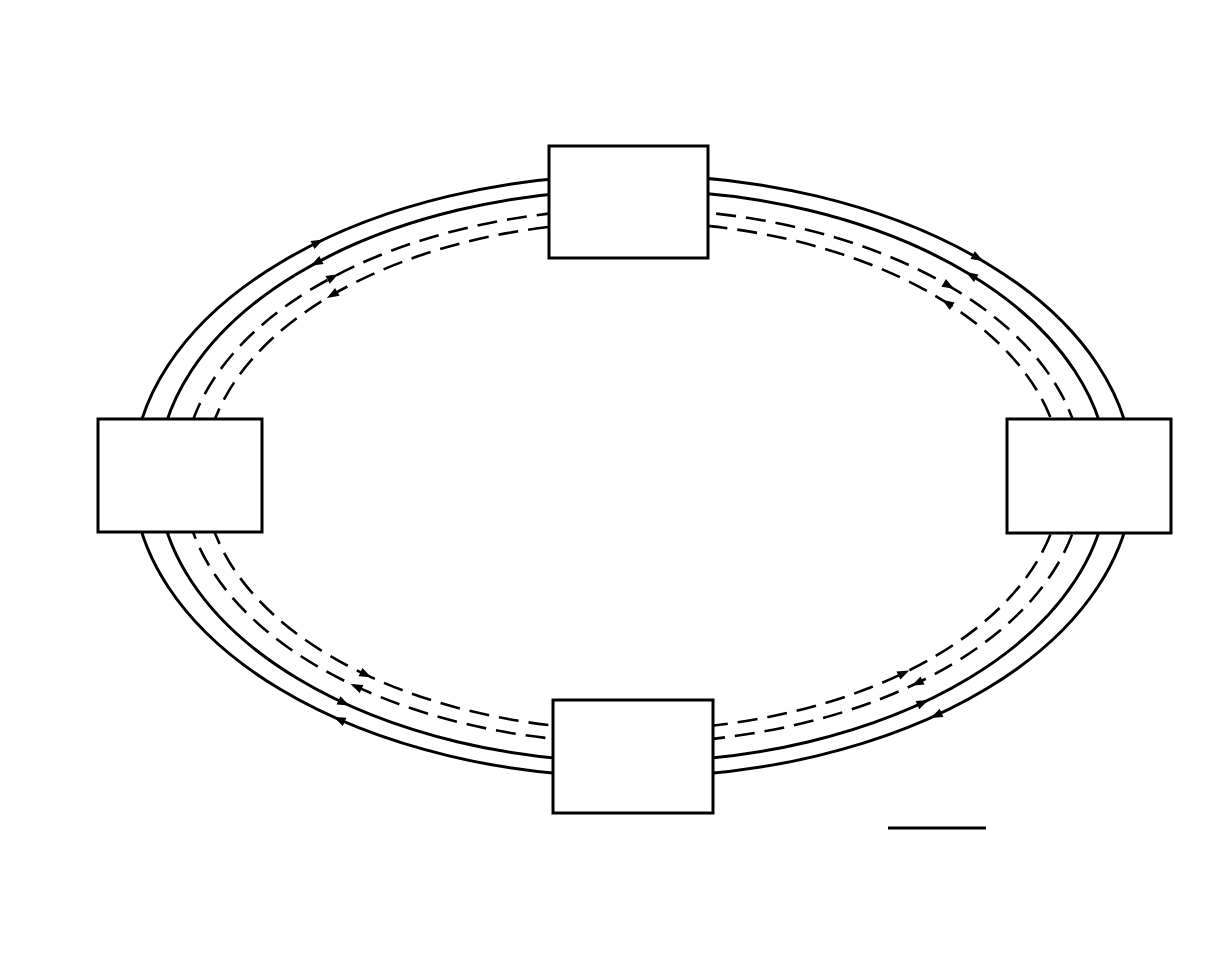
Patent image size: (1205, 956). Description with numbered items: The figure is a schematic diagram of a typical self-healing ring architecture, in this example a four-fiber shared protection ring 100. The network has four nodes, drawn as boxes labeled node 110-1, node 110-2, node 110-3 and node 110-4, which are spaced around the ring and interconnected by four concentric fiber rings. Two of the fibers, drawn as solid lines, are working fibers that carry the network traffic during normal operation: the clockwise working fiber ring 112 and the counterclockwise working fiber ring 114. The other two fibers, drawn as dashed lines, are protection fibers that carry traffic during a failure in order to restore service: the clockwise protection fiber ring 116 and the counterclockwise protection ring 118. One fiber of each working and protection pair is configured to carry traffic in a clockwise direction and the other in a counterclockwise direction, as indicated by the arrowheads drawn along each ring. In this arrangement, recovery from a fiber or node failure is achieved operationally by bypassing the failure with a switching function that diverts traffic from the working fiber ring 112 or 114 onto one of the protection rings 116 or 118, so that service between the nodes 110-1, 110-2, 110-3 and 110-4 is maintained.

The four-fiber shared protection ring 100 is at (363, 186).
The node 110-1 is at (710, 160).
The node 110-2 is at (1006, 457).
The node 110-3 is at (645, 699).
The node 110-4 is at (263, 481).
The clockwise working fiber ring 112 is at (845, 204).
The counterclockwise working fiber ring 114 is at (990, 284).
The clockwise protection fiber ring 116 is at (996, 322).
The counterclockwise protection ring 118 is at (878, 263).